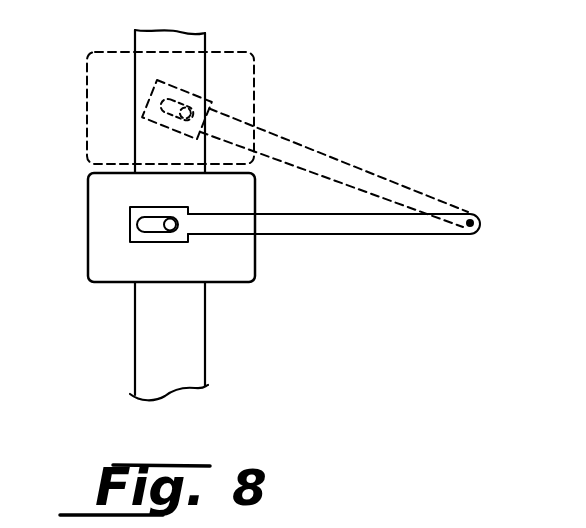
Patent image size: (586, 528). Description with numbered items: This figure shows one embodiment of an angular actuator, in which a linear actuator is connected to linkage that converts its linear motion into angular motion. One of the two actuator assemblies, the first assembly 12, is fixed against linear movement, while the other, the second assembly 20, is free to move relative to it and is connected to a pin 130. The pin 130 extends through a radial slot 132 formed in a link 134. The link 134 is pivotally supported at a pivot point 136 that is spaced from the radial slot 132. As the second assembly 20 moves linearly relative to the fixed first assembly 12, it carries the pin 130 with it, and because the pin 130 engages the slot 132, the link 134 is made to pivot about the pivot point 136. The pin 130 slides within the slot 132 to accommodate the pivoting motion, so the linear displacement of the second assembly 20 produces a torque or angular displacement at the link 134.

The first assembly 12 is at (205, 332).
The second assembly 20 is at (97, 284).
The pin 130 is at (168, 226).
The radial slot 132 is at (138, 223).
The link 134 is at (340, 235).
The pivot point 136 is at (471, 222).